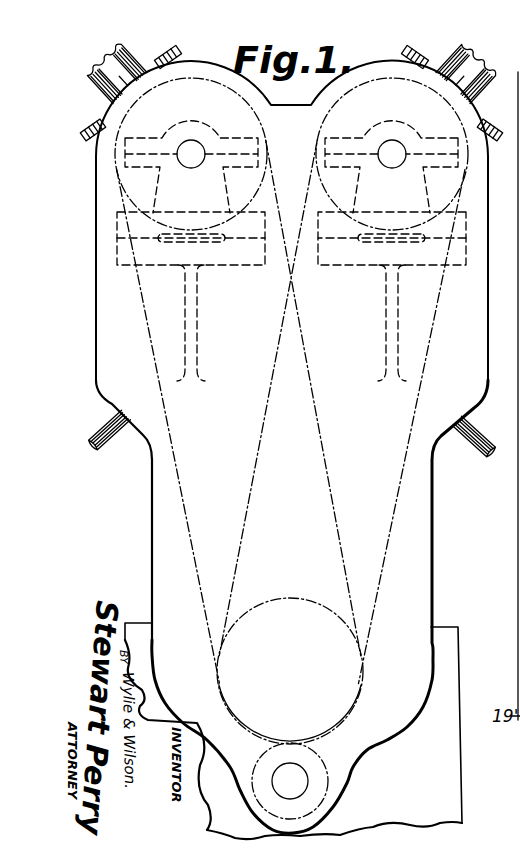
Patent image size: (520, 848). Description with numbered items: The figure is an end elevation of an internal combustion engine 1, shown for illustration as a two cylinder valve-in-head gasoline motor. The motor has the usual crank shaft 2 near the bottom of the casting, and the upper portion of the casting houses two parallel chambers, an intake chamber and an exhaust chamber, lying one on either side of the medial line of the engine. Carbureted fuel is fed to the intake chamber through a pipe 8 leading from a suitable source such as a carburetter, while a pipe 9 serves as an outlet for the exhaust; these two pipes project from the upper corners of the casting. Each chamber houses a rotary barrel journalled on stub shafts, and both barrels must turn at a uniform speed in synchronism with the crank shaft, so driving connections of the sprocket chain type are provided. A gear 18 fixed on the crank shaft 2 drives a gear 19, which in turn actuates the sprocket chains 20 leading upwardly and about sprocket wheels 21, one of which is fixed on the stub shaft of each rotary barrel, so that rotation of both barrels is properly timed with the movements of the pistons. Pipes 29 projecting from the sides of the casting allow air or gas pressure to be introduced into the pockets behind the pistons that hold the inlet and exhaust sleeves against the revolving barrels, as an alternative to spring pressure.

The internal combustion engine 1 is at (425, 552).
The crank shaft 2 is at (310, 788).
The pipe 8 is at (106, 69).
The pipe 9 is at (477, 74).
The gear 18 is at (322, 757).
The gear 19 is at (296, 598).
The sprocket chains 20 is at (328, 466).
The sprocket wheels 21 is at (224, 224).
The pipes 29 is at (109, 448).